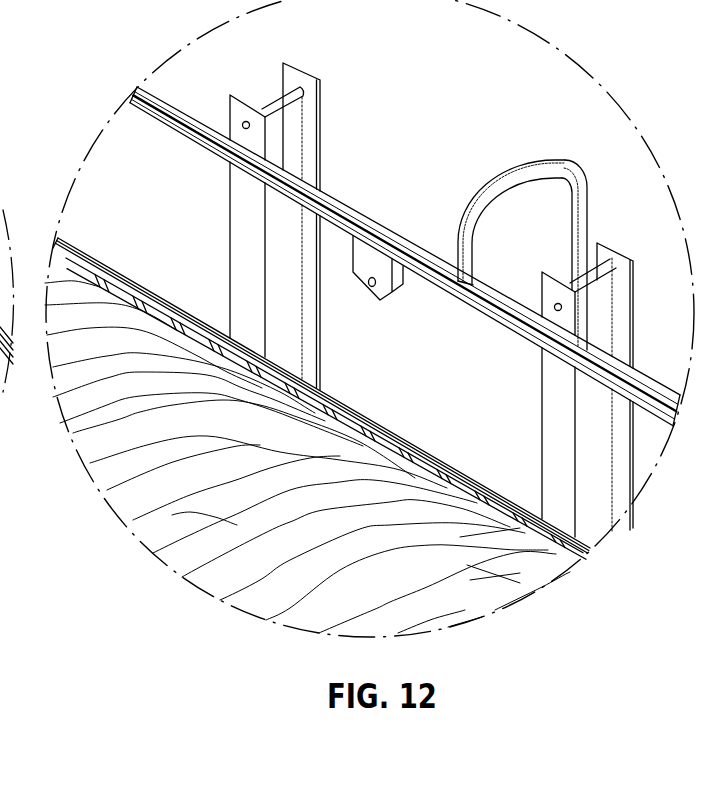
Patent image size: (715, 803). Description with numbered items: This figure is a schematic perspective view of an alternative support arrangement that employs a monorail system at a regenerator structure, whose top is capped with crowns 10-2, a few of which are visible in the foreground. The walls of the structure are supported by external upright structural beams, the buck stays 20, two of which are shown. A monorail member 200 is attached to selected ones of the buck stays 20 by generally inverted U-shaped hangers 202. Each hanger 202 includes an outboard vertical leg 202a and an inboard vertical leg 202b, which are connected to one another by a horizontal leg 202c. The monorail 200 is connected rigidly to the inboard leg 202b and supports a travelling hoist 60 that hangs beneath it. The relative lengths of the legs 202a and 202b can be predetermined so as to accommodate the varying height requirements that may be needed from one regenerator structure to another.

The crowns 10-2 is at (187, 477).
The buck stays 20 is at (321, 116).
The travelling hoist 60 is at (398, 286).
The monorail member 200 is at (368, 220).
The hangers 202 is at (571, 199).
The outboard vertical leg 202a is at (502, 187).
The inboard vertical leg 202b is at (476, 258).
The horizontal leg 202c is at (586, 217).